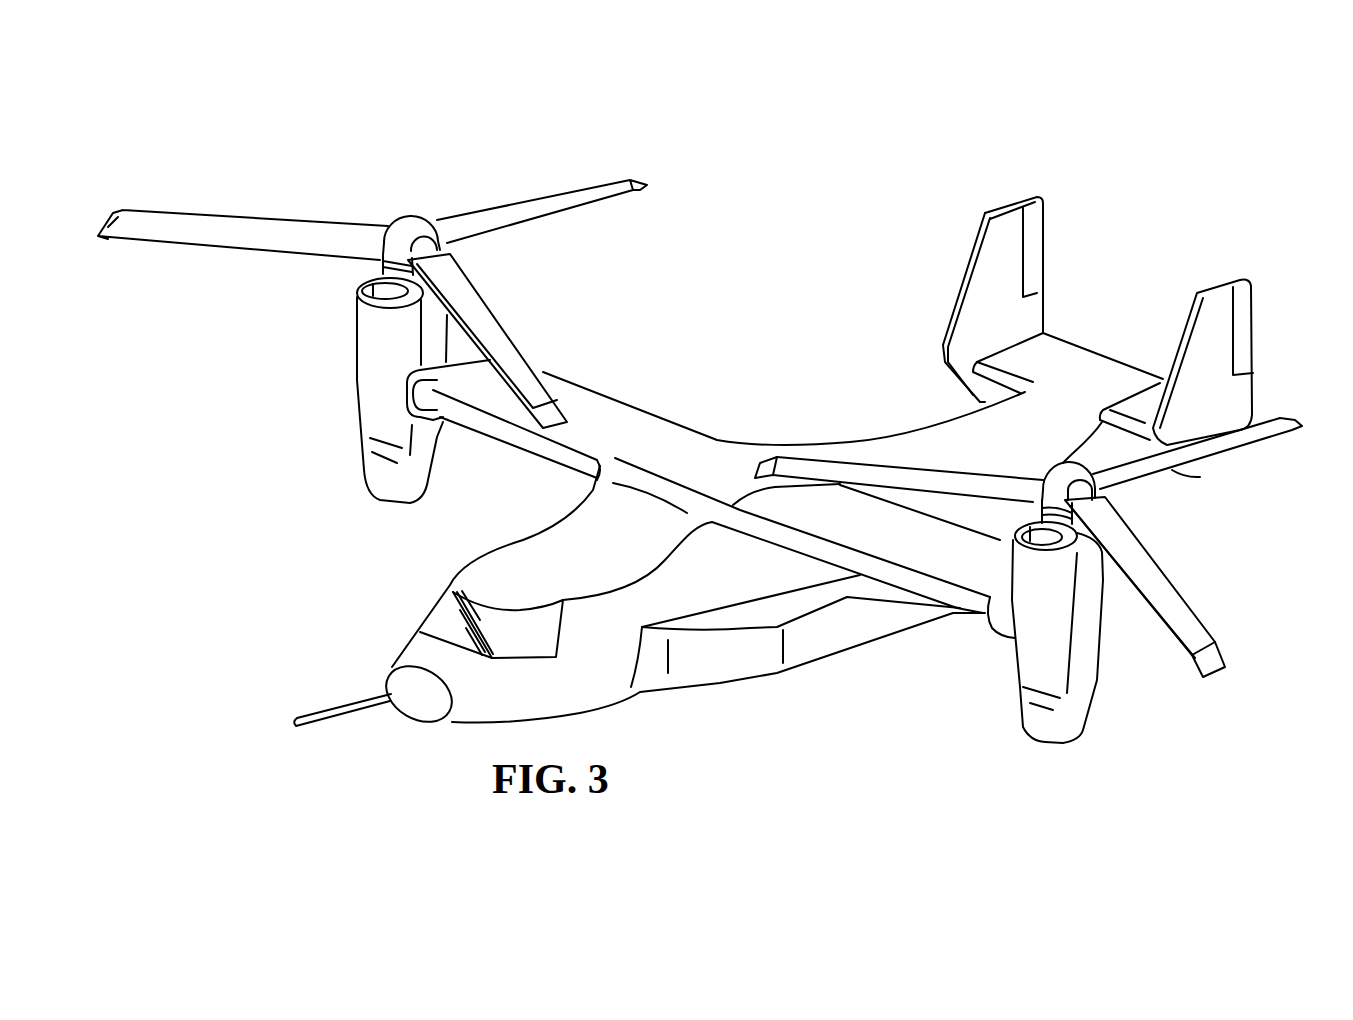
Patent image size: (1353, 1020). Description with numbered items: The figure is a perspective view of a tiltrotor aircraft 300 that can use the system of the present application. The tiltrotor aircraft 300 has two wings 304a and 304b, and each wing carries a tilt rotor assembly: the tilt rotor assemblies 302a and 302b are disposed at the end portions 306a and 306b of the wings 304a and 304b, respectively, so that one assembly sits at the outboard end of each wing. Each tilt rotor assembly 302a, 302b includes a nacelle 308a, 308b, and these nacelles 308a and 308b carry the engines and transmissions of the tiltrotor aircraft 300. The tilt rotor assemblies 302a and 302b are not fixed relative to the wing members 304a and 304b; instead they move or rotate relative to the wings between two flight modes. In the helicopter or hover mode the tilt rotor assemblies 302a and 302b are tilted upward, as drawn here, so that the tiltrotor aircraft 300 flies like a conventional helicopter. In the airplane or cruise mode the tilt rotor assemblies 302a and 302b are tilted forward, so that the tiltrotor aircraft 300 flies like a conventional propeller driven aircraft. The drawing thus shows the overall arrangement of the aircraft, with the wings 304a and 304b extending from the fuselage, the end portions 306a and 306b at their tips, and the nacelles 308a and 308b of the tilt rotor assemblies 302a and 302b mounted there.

The tiltrotor aircraft 300 is at (983, 128).
The tilt rotor assembly 302a is at (320, 303).
The tilt rotor assembly 302b is at (1167, 572).
The wing 304a is at (620, 413).
The wing 304b is at (862, 575).
The end portion 306a is at (470, 327).
The end portion 306b is at (1000, 514).
The nacelle 308a is at (357, 393).
The nacelle 308b is at (1100, 680).